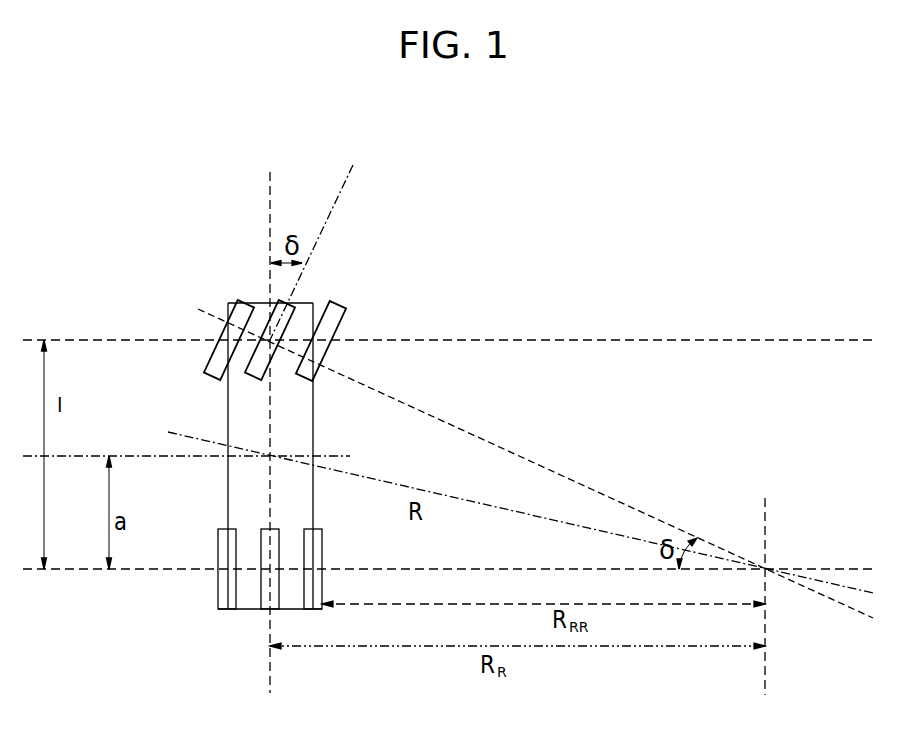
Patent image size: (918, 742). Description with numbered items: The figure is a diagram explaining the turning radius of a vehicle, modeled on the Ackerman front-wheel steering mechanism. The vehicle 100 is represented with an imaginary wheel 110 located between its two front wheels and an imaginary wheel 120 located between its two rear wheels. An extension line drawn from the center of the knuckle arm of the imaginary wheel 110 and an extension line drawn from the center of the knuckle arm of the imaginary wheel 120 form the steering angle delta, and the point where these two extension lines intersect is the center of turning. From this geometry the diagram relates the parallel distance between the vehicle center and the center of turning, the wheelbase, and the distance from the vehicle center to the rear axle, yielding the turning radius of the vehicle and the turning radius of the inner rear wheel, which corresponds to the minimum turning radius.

The sensor housing 100 is at (314, 466).
The imaginary wheel between two front wheels 110 is at (278, 322).
The imaginary wheel between two rear wheels 120 is at (265, 607).